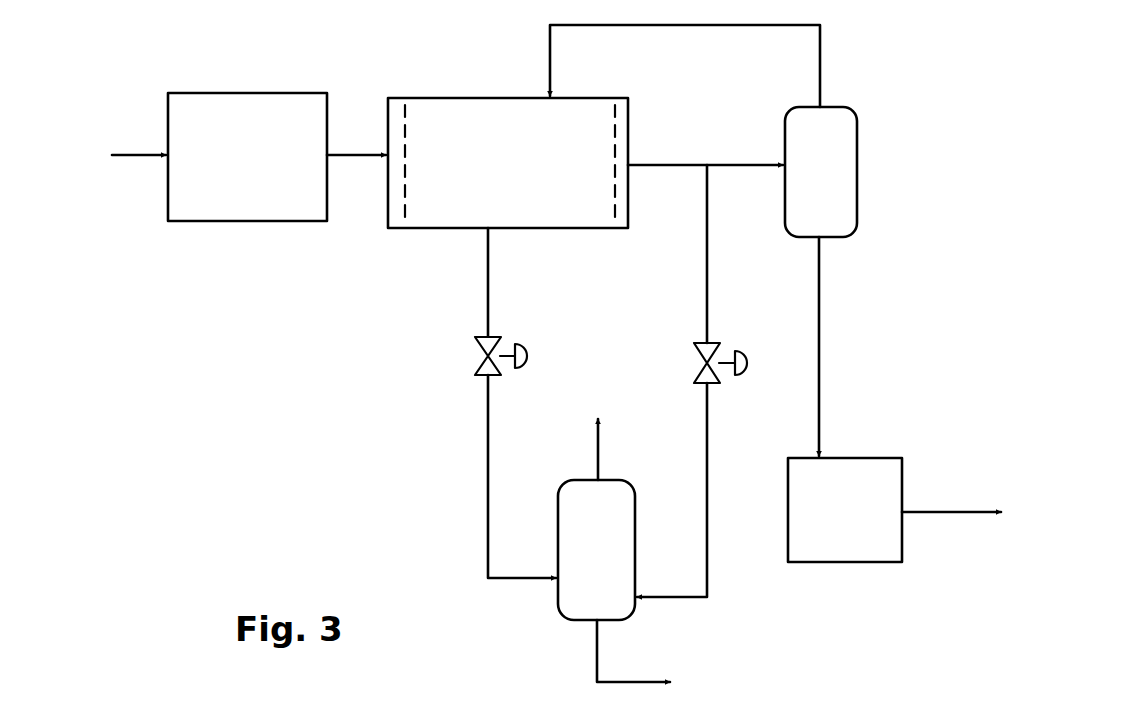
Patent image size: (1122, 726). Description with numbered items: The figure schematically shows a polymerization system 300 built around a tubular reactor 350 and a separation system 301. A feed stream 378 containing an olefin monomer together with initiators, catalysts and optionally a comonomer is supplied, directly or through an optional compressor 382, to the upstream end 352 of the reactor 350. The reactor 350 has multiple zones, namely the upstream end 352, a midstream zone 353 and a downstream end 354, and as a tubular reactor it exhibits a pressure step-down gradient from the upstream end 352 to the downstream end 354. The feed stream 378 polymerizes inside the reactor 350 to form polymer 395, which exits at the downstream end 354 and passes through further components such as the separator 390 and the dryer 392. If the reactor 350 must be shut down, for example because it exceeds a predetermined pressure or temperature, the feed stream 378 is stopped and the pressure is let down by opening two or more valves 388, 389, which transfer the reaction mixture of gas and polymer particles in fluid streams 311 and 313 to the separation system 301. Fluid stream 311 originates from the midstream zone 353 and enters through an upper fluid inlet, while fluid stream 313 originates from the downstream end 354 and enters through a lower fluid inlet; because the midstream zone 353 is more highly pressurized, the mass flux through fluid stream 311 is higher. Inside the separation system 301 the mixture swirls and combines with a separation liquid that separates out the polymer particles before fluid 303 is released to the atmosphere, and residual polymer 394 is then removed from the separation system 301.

The polymerization system 300 is at (958, 95).
The feed stream 378 is at (132, 152).
The compressor 382 is at (252, 92).
The reactor 350 is at (505, 95).
The upstream end 352 is at (385, 127).
The downstream end 354 is at (628, 128).
The midstream zone 353 is at (493, 188).
The fluid stream 311 is at (485, 280).
The fluid stream 313 is at (705, 260).
The valve 388 is at (480, 345).
The valve 389 is at (698, 355).
The separator 390 is at (857, 180).
The dryer 392 is at (907, 475).
The polymer 395 is at (937, 513).
The separation system 301 is at (557, 598).
The fluid 303 is at (598, 450).
The residual polymer 394 is at (625, 680).